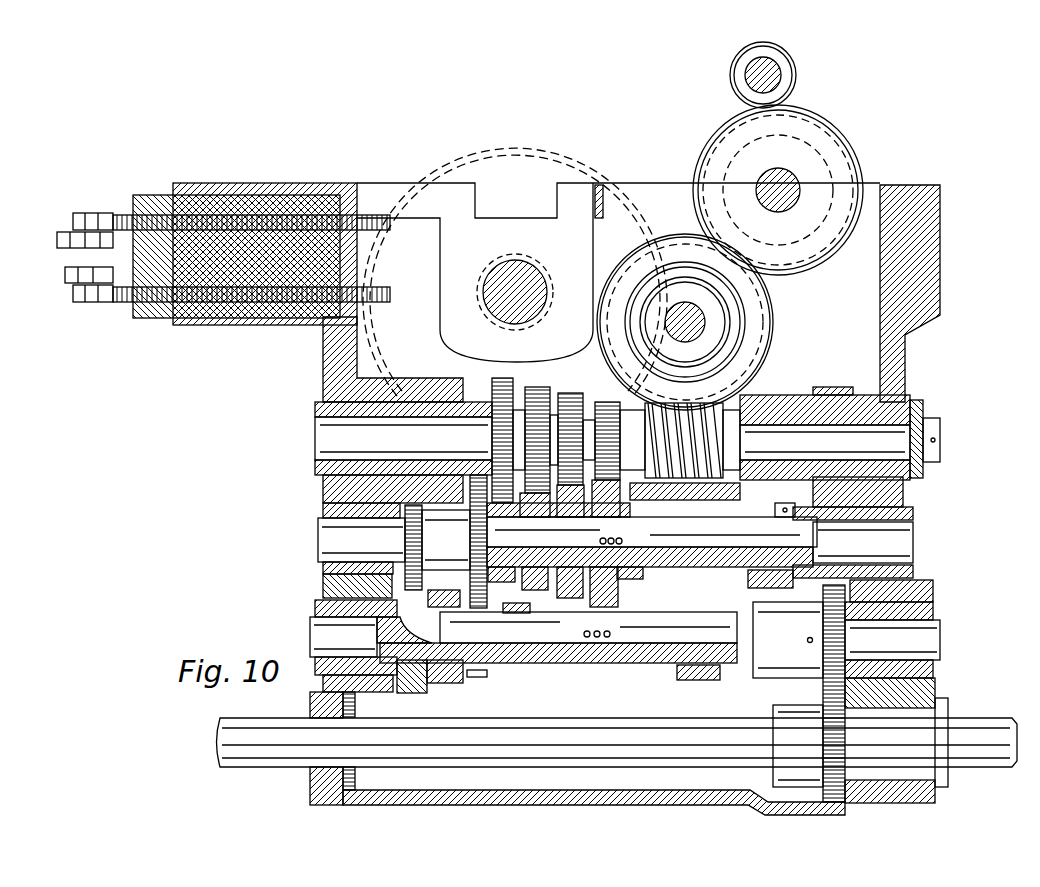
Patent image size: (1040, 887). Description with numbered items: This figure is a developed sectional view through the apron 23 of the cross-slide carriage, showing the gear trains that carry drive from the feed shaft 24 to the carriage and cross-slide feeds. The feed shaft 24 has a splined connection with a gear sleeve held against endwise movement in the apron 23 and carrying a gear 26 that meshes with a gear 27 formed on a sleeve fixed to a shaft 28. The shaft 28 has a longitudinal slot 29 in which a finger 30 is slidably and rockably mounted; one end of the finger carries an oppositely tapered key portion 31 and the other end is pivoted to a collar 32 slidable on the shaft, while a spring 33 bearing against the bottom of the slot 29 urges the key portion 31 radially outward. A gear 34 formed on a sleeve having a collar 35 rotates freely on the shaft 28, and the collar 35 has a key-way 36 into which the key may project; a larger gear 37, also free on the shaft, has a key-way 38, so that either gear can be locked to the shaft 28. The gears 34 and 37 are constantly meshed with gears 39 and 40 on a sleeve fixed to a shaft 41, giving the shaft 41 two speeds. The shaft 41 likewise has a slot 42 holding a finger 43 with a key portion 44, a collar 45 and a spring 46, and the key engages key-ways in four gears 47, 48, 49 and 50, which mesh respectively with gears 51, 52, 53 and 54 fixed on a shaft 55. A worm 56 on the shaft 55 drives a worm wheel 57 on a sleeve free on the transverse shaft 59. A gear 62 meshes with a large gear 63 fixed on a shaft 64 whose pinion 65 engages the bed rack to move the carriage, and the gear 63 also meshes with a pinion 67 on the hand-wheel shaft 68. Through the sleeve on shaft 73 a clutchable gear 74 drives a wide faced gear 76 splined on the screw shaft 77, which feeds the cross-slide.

The apron 23 is at (912, 375).
The feed shaft 24 is at (978, 724).
The gear 26 is at (833, 726).
The gear 27 is at (822, 626).
The shaft 28 is at (932, 632).
The slot 29 is at (620, 665).
The finger 30 is at (630, 627).
The key portion 31 is at (440, 612).
The collar 32 is at (712, 673).
The spring 33 is at (590, 637).
The gear 34 is at (478, 678).
The collar 35 is at (447, 683).
The key-way 36 is at (455, 597).
The gear 37 is at (410, 695).
The key-way 38 is at (322, 600).
The gear 39 is at (424, 540).
The gear 40 is at (402, 538).
The shaft 41 is at (905, 545).
The slot 42 is at (640, 545).
The finger 43 is at (815, 556).
The key portion 44 is at (640, 576).
The collar 45 is at (788, 583).
The spring 46 is at (683, 540).
The gear 47 is at (495, 540).
The gear 48 is at (532, 570).
The gear 49 is at (565, 572).
The gear 50 is at (605, 575).
The gear 51 is at (495, 382).
The gear 52 is at (538, 388).
The gear 53 is at (570, 395).
The gear 54 is at (607, 405).
The shaft 55 is at (832, 436).
The worm 56 is at (720, 445).
The worm wheel 57 is at (760, 318).
The shaft 59 is at (712, 305).
The gear 62 is at (674, 300).
The gear 63 is at (560, 158).
The shaft 64 is at (505, 296).
The pinion 65 is at (545, 272).
The pinion 67 is at (316, 185).
The shaft 68 is at (374, 216).
The shaft 73 is at (785, 183).
The gear 74 is at (850, 160).
The wide faced gear 76 is at (796, 80).
The screw shaft 77 is at (777, 68).